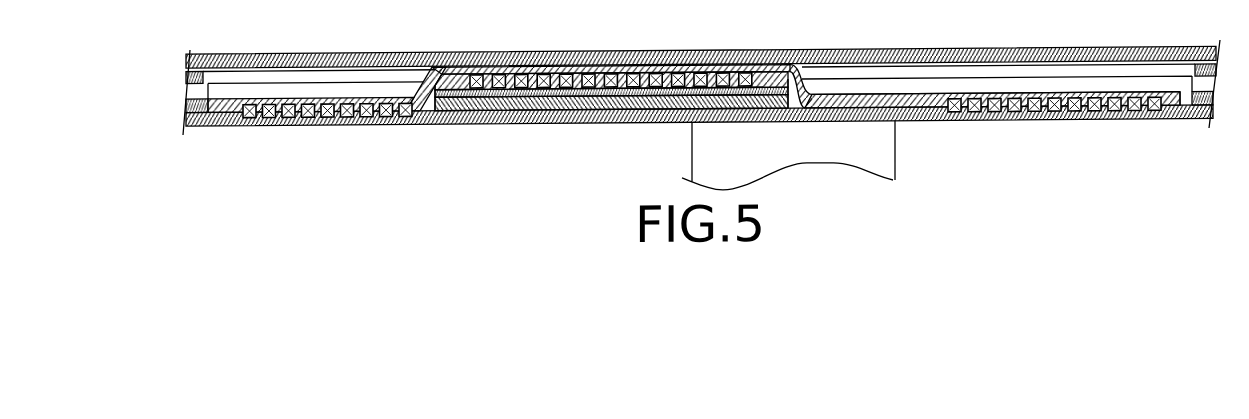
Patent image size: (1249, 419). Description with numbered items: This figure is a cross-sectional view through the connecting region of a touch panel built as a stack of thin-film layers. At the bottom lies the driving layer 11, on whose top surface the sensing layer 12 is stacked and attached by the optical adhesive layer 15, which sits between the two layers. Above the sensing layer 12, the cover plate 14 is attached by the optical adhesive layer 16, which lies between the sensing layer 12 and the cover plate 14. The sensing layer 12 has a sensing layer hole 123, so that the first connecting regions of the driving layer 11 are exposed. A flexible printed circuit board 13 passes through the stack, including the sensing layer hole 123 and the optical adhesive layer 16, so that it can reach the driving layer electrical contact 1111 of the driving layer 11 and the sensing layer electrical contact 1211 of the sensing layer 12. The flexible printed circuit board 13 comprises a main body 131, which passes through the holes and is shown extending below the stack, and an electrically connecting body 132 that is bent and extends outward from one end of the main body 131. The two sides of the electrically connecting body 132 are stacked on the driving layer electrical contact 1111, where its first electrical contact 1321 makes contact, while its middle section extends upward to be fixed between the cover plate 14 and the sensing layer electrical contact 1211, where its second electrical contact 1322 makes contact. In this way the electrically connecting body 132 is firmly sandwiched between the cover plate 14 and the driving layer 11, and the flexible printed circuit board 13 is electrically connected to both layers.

The driving layer 11 is at (174, 121).
The sensing layer 12 is at (172, 94).
The flexible printed circuit board 13 is at (694, 98).
The cover plate 14 is at (169, 63).
The optical adhesive layer 15 is at (188, 105).
The optical adhesive layer 16 is at (185, 76).
The sensing layer hole 123 is at (358, 96).
The main body 131 is at (702, 148).
The electrically connecting body 132 is at (455, 56).
The driving layer electrical contact 1111 is at (309, 123).
The sensing layer electrical contact 1211 is at (597, 104).
The first electrical contact 1321 is at (310, 100).
The second electrical contact 1322 is at (590, 56).